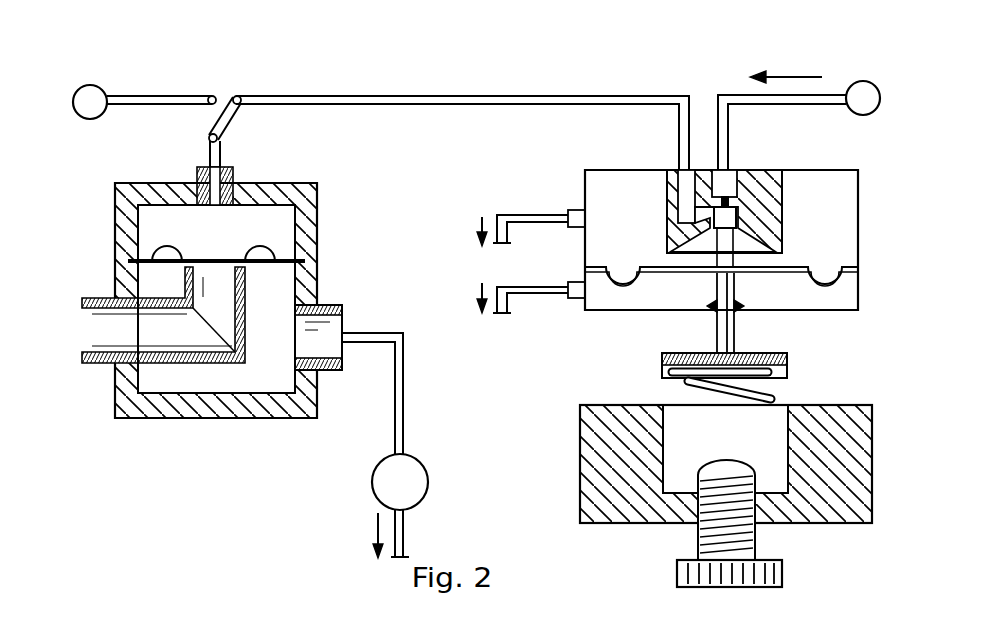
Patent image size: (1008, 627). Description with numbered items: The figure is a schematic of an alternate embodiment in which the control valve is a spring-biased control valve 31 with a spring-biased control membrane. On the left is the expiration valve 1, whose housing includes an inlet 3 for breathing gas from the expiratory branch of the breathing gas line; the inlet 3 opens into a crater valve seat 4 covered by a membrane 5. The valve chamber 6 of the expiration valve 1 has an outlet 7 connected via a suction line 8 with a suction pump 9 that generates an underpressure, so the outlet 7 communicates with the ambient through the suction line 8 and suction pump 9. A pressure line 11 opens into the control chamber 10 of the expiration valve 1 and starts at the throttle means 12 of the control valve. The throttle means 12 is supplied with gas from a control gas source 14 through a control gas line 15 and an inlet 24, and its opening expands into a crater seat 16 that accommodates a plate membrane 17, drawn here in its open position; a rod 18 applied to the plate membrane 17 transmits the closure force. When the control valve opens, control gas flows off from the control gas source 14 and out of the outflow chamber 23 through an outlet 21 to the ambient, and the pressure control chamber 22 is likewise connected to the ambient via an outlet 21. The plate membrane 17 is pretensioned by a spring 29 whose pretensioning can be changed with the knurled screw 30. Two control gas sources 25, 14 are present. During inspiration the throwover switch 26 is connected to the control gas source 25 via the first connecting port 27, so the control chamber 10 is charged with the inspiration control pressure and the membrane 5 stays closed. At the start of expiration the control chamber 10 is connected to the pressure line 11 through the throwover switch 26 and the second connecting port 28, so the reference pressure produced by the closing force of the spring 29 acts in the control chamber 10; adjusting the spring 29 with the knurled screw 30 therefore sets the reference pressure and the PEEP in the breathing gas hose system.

The expiration valve 1 is at (170, 420).
The inlet 3 is at (133, 335).
The crater valve seat 4 is at (260, 267).
The membrane 5 is at (148, 277).
The valve chamber 6 is at (262, 375).
The outlet 7 is at (330, 330).
The suction line 8 is at (398, 423).
The suction pump 9 is at (382, 495).
The control chamber 10 is at (148, 222).
The pressure line 11 is at (375, 94).
The throttle means 12 is at (735, 204).
The control gas source 14 is at (863, 86).
The control gas line 15 is at (740, 95).
The crater seat 16 is at (773, 257).
The plate membrane 17 is at (838, 288).
The rod 18 is at (730, 320).
The outlet 21 is at (577, 210).
The pressure control chamber 22 is at (685, 303).
The outflow chamber 23 is at (612, 210).
The inlet 24 is at (727, 183).
The control gas source 25 is at (95, 88).
The throwover switch 26 is at (233, 116).
The first connecting port 27 is at (210, 96).
The second connecting port 28 is at (237, 96).
The spring 29 is at (673, 418).
The knurled screw 30 is at (697, 540).
The spring-biased control valve 31 is at (822, 532).